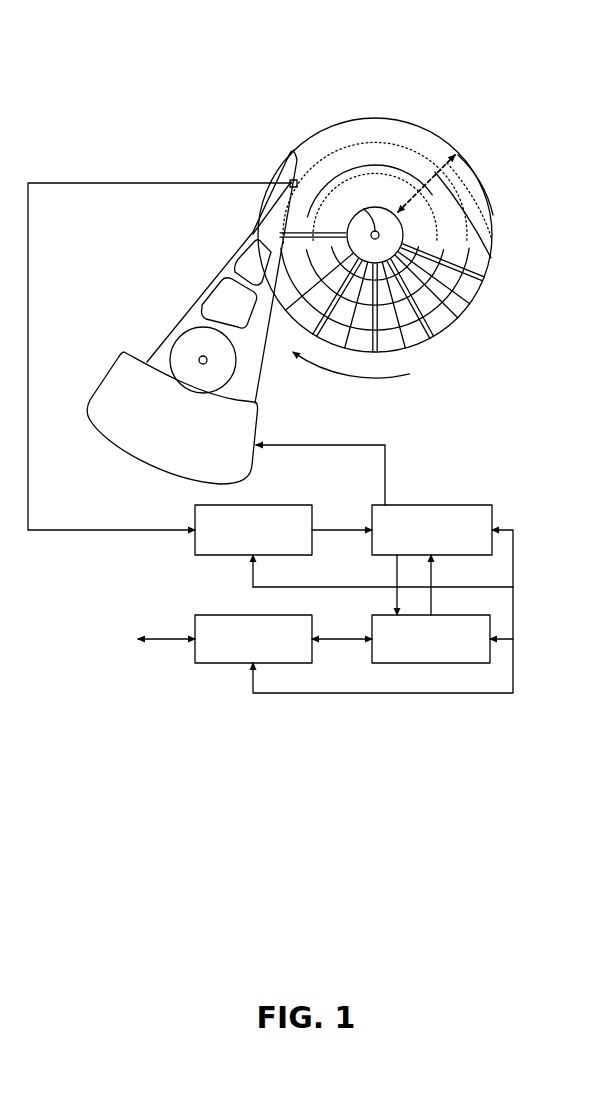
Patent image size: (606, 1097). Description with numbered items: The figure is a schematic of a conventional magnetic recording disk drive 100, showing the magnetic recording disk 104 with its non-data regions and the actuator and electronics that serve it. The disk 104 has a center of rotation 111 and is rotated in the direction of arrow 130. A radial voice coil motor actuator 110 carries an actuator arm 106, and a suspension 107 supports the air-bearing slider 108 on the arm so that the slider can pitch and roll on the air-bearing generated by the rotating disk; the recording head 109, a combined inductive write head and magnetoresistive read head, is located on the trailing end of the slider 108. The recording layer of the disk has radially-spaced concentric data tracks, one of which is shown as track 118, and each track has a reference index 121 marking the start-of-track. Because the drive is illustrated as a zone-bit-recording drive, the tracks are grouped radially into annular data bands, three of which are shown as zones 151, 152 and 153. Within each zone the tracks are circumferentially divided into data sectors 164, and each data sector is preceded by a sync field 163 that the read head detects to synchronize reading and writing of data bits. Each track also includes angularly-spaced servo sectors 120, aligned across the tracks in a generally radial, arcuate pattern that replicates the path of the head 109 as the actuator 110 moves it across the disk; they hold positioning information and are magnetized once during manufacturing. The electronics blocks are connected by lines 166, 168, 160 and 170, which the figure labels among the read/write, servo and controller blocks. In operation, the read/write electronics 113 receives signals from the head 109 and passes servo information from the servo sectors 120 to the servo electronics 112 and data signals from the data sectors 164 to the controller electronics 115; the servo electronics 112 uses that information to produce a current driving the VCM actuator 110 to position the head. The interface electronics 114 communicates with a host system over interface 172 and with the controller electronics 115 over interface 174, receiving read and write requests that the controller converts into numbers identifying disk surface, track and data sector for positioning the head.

The disk drive 100 is at (93, 72).
The magnetic recording disk 104 is at (347, 123).
The actuator arm 106 is at (236, 256).
The suspension 107 is at (268, 222).
The air-bearing slider 108 is at (292, 181).
The recording head 109 is at (292, 157).
The voice coil motor actuator 110 is at (126, 352).
The center of rotation 111 is at (367, 210).
The servo electronics 112 is at (476, 505).
The read/write electronics 113 is at (298, 505).
The interface electronics 114 is at (208, 615).
The controller electronics 115 is at (386, 663).
The data track 118 is at (438, 140).
The servo sectors 120 is at (432, 336).
The reference index 121 is at (477, 293).
The direction of rotation 130 is at (378, 378).
The data zone 151 is at (492, 216).
The data zone 152 is at (492, 262).
The data zone 153 is at (401, 176).
The servo control signal line 160 is at (432, 590).
The sync fields 163 is at (462, 310).
The data sectors 164 is at (473, 300).
The read/write signal line 166 is at (346, 538).
The servo signal line 168 is at (390, 588).
The controller signal line 170 is at (514, 590).
The interface 172 is at (168, 637).
The interface 174 is at (333, 634).